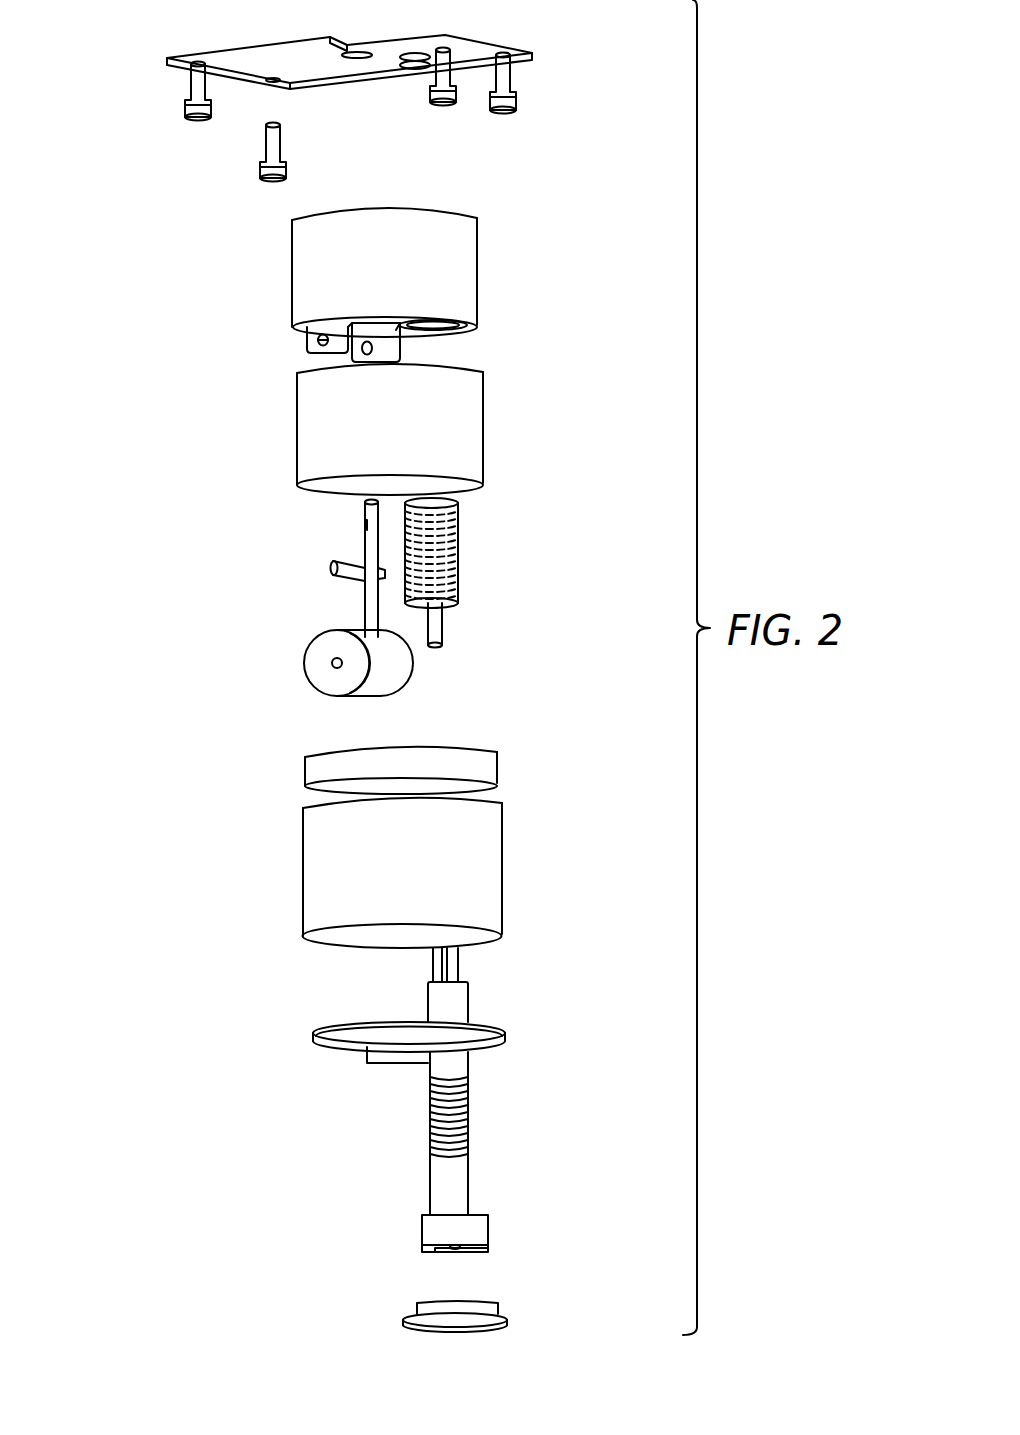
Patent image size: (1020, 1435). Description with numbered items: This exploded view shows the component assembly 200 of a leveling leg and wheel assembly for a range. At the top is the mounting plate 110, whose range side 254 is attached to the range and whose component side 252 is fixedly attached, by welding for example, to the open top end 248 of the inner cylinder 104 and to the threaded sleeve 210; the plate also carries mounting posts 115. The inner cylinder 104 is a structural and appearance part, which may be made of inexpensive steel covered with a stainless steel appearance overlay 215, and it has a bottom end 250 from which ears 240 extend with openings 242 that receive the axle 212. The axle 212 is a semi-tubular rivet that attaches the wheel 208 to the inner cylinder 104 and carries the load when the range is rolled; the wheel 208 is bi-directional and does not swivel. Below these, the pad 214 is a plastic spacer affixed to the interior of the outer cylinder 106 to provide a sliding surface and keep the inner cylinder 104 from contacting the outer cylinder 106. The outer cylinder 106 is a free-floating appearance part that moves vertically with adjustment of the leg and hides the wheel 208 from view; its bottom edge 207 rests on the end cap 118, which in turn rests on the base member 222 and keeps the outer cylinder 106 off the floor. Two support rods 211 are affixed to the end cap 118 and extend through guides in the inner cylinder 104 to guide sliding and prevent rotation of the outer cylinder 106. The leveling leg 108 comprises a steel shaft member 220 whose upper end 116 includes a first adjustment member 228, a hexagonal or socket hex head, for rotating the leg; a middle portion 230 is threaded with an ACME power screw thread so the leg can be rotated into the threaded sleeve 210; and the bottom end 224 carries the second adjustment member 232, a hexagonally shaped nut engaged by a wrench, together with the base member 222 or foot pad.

The component assembly 200 is at (745, 535).
The mounting plate 110 is at (197, 52).
The range side 254 is at (282, 42).
The mounting posts 115 is at (520, 83).
The component side 252 is at (318, 67).
The inner cylinder 104 is at (467, 232).
The open top end 248 is at (413, 207).
The bottom end 250 is at (483, 327).
The ears 240 is at (383, 353).
The openings 242 is at (313, 345).
The stainless steel appearance overlay 215 is at (305, 440).
The axle 212 is at (345, 562).
The threaded sleeve 210 is at (458, 523).
The support rods 211 is at (438, 630).
The wheel 208 is at (318, 678).
The pad 214 is at (487, 765).
The outer cylinder 106 is at (332, 845).
The bottom edge 207 is at (478, 932).
The leveling leg 108 is at (290, 1124).
The first adjustment member 228 is at (452, 958).
The upper end 116 is at (493, 1009).
The end cap 118 is at (315, 1042).
The bottom end 224 is at (510, 1170).
The middle portion 230 is at (435, 1118).
The shaft member 220 is at (465, 1120).
The second adjustment member 232 is at (430, 1232).
The base member 222 is at (503, 1312).